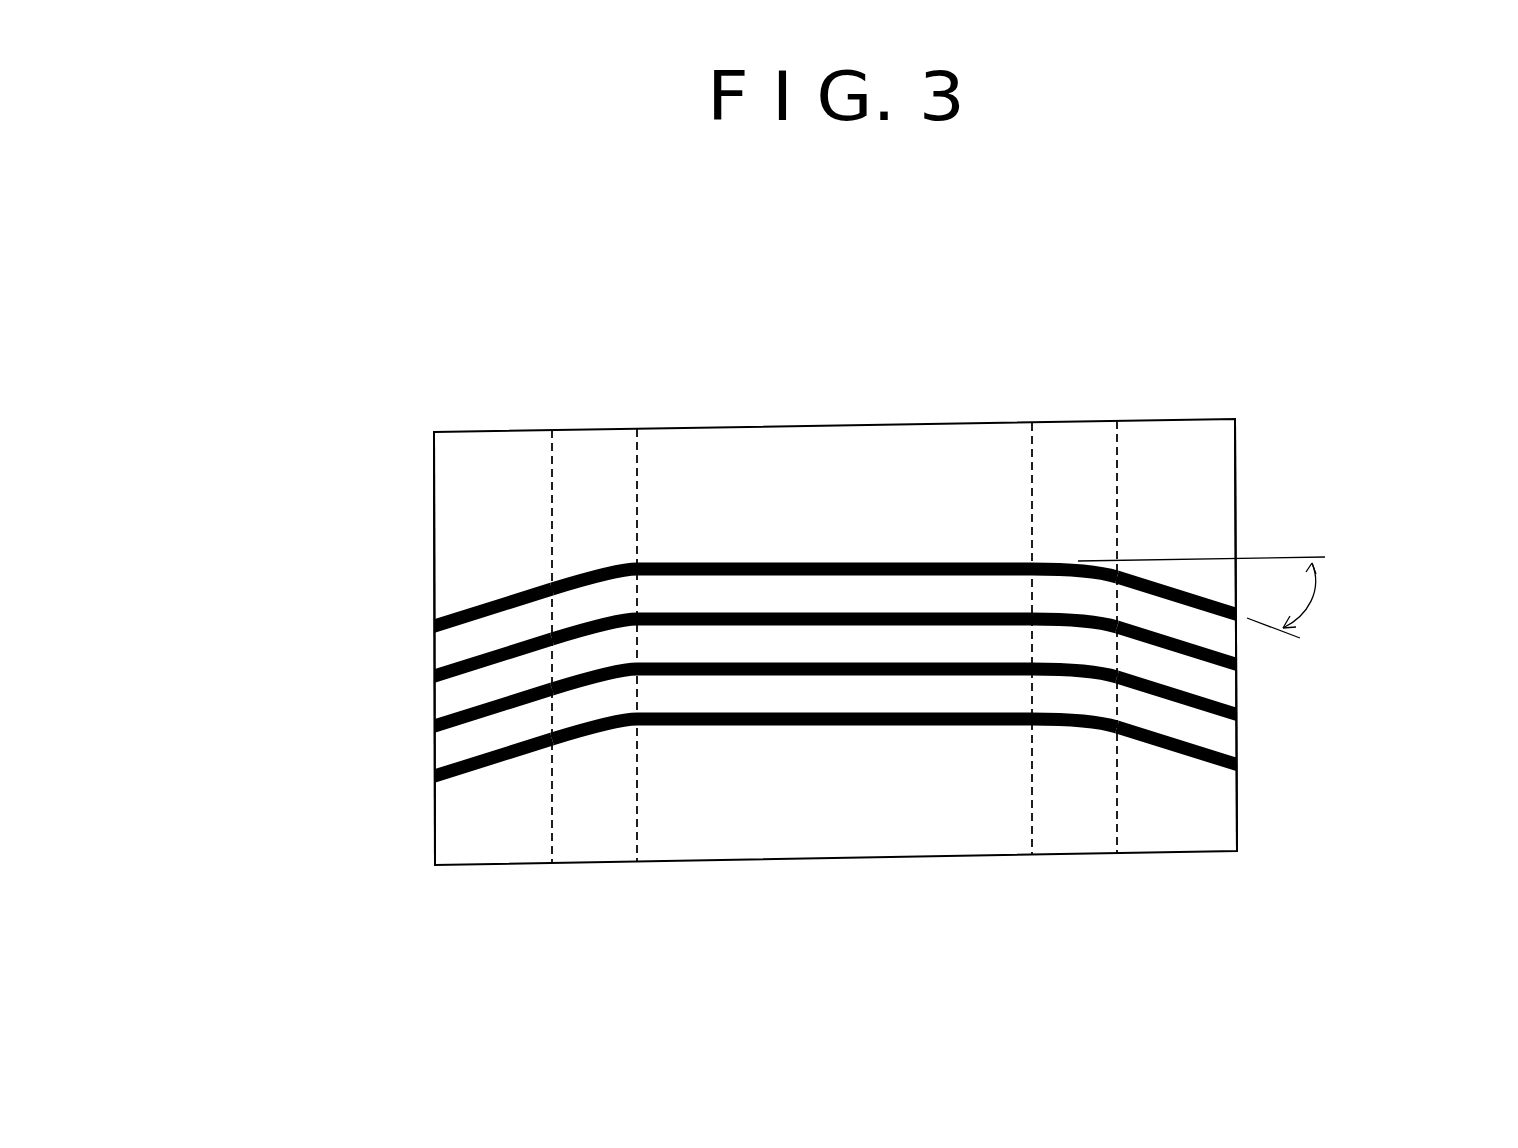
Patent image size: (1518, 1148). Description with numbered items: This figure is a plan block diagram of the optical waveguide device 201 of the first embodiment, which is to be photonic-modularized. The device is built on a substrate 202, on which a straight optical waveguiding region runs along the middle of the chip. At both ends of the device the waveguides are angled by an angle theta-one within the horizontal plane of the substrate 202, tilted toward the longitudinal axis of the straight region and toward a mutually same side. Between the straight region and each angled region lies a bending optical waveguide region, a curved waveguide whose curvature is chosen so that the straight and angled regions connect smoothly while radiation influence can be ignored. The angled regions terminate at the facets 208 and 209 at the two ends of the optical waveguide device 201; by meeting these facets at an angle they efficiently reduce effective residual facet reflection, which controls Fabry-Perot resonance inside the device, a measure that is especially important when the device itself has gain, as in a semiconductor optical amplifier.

The optical waveguide device 201 is at (820, 602).
The substrate 202 is at (1128, 853).
The facet 208 is at (376, 648).
The facet 209 is at (1289, 635).